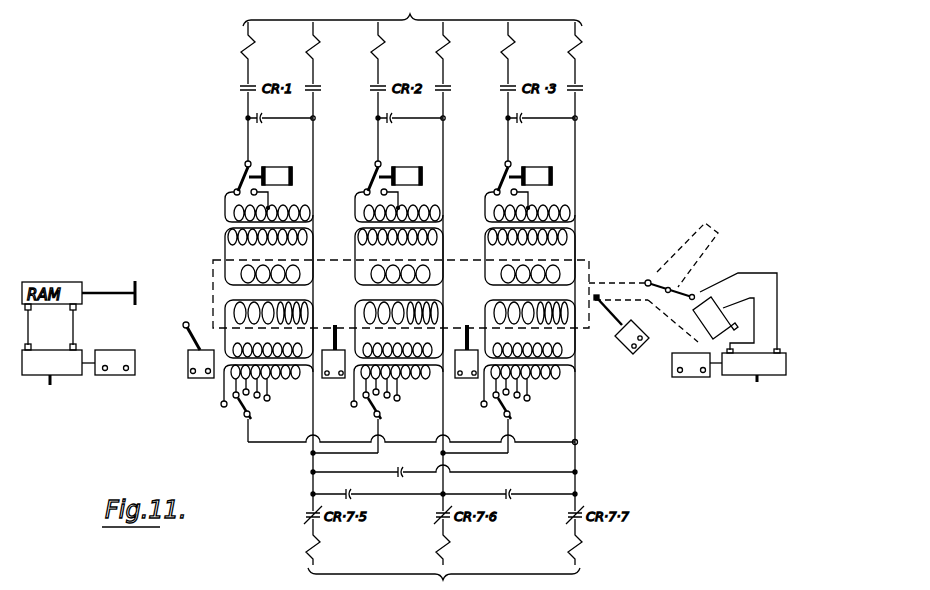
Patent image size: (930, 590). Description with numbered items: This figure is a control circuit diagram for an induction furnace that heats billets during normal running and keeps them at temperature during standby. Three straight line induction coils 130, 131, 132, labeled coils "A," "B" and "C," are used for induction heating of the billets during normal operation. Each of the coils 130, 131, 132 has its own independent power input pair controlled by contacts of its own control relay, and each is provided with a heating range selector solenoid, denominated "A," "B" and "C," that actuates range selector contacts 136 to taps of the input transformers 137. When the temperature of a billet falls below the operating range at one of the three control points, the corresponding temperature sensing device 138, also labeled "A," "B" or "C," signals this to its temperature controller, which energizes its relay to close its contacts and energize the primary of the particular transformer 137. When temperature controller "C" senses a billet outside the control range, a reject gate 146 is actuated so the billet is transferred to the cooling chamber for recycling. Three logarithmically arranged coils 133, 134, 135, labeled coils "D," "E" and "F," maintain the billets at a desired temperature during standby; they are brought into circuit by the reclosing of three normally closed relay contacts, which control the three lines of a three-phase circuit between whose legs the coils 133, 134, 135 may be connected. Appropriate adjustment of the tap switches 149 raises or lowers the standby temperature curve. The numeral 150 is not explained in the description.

The straight line induction coil 130 is at (228, 268).
The straight line induction coil 131 is at (363, 257).
The straight line induction coil 132 is at (492, 262).
The logarithmically arranged coil 133 is at (222, 307).
The logarithmically arranged coil 134 is at (357, 302).
The logarithmically arranged coil 135 is at (488, 302).
The range selector contacts 136 is at (241, 183).
The input transformer 137 is at (219, 222).
The temperature sensing device 138 is at (345, 379).
The reject gate 146 is at (646, 280).
The tap switch 149 is at (233, 416).
The relay contact assembly 150 is at (221, 376).